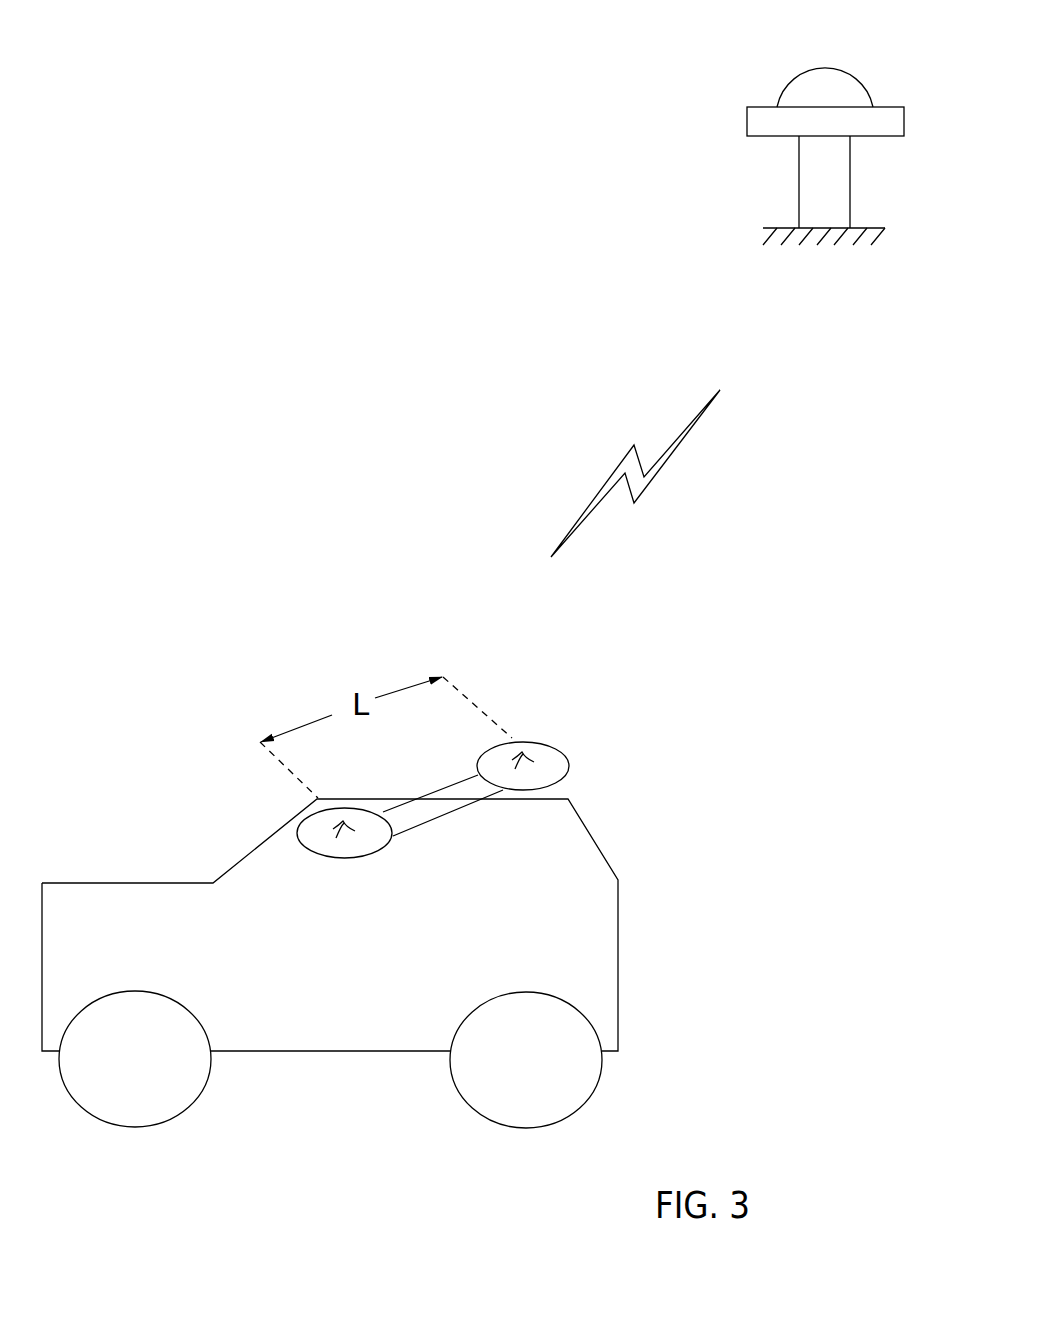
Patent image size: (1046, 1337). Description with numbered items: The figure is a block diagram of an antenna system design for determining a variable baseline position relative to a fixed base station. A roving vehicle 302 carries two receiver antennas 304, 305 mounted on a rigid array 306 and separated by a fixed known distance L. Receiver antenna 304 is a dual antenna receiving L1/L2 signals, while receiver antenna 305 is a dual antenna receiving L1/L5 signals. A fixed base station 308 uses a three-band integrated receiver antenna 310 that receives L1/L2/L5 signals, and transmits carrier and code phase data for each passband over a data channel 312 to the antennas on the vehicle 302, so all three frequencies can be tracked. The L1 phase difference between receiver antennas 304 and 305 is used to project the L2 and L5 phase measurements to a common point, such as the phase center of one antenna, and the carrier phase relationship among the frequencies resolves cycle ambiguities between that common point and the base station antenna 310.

The vehicle 302 is at (604, 849).
The receiver antenna 304 is at (341, 821).
The receiver antenna 305 is at (521, 744).
The rigid array 306 is at (451, 815).
The fixed base station 308 is at (739, 131).
The three-band integrated receiver antenna 310 is at (825, 53).
The data channel 312 is at (576, 506).